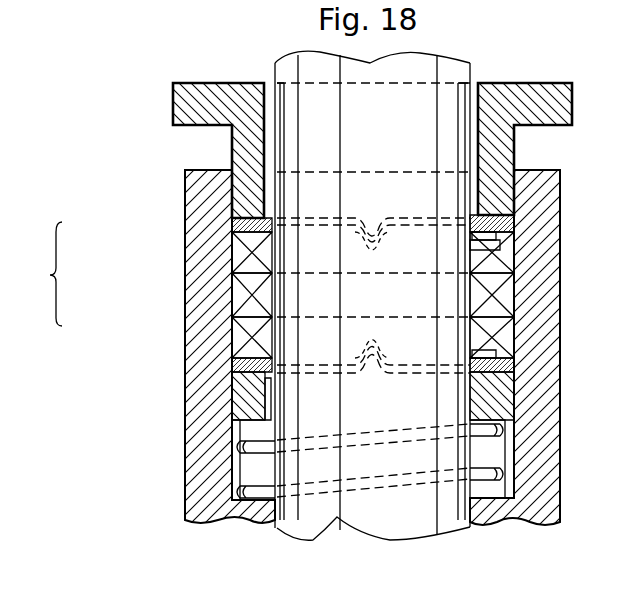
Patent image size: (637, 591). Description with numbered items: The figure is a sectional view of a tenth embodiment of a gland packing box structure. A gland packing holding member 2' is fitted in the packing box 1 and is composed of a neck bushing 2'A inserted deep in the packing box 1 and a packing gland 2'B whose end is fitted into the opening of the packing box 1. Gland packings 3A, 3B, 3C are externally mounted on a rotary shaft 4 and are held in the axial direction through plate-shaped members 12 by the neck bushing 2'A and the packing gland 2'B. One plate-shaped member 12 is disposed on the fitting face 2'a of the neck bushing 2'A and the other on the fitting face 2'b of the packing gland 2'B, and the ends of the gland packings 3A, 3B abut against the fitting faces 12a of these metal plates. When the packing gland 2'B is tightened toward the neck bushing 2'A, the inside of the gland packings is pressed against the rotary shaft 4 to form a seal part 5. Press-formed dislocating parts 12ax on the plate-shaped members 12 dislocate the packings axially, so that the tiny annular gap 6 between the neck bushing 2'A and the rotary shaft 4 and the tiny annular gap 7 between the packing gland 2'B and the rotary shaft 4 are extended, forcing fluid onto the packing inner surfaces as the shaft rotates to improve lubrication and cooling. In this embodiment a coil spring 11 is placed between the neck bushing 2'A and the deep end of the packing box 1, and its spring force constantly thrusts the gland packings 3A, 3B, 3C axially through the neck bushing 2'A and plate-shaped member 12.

The packing box 1 is at (562, 470).
The gland packing holding member 2' is at (46, 274).
The neck bushing 2'A is at (290, 397).
The packing gland 2'B is at (319, 169).
The fitting face of the neck bushing 2'a is at (206, 348).
The fitting face of the packing gland 2'b is at (206, 253).
The gland packing 3A is at (492, 340).
The gland packing 3B is at (492, 300).
The gland packing 3C is at (492, 280).
The rotary shaft 4 is at (455, 527).
The seal part 5 is at (500, 246).
The annular gap 6 is at (275, 400).
The annular gap 7 is at (272, 85).
The coil spring 11 is at (405, 490).
The plate-shaped member 12 is at (505, 175).
The fitting face of the plate-shaped member 12a is at (490, 236).
The dislocating part 12ax is at (370, 222).